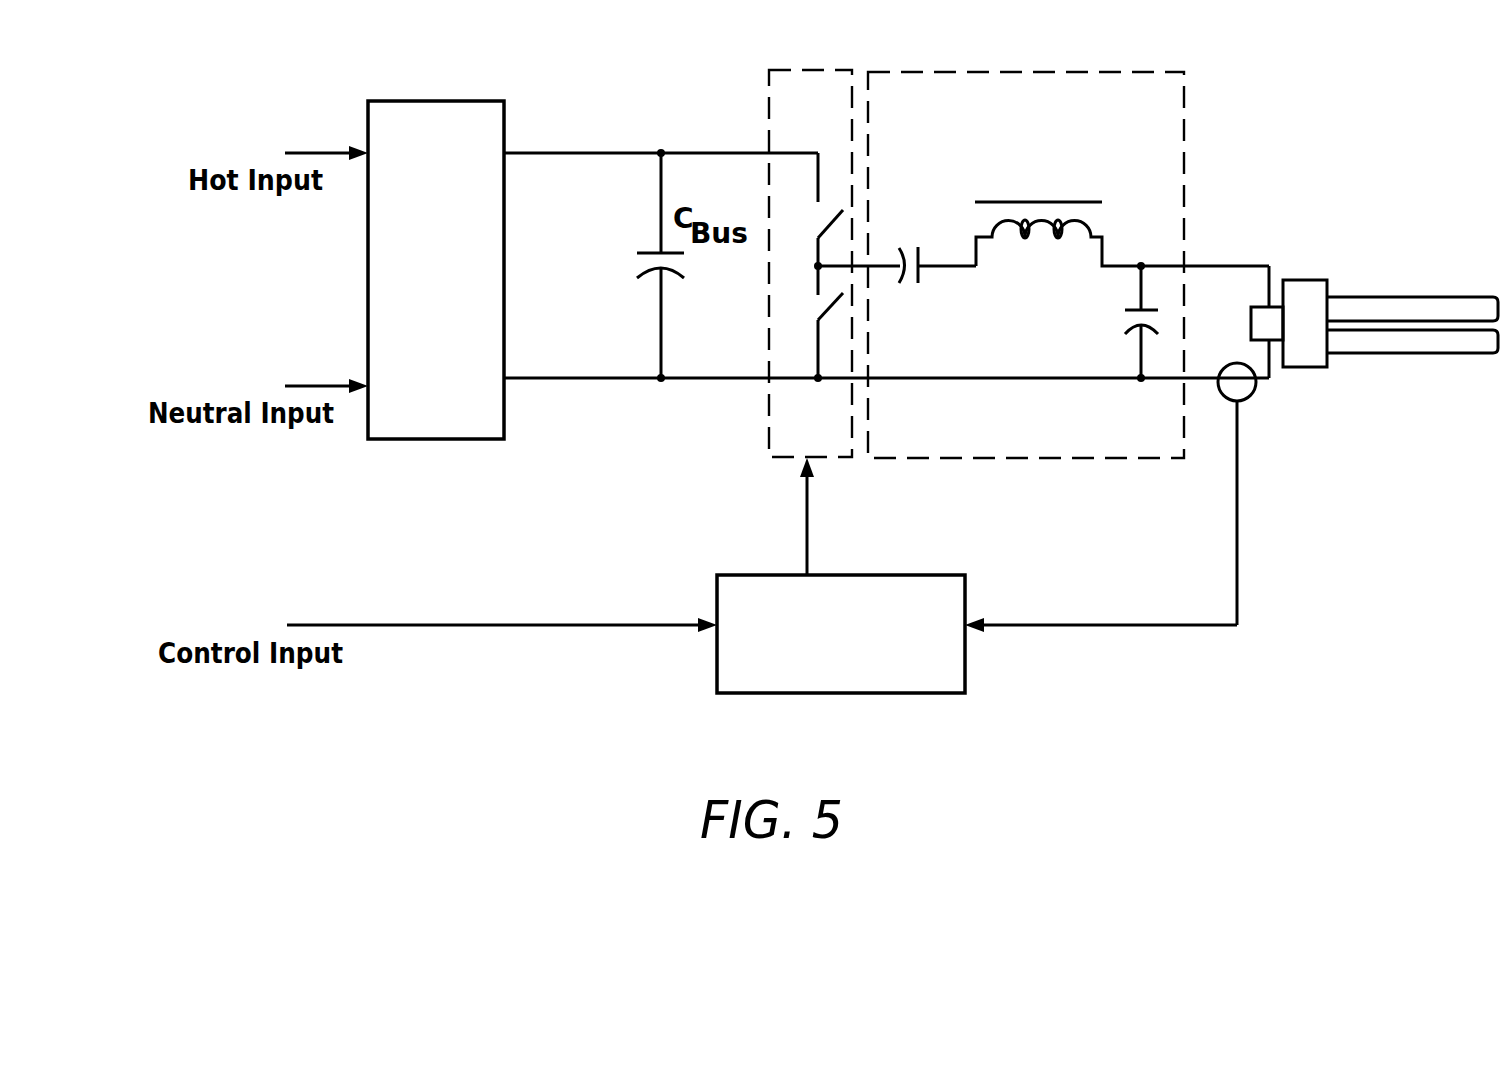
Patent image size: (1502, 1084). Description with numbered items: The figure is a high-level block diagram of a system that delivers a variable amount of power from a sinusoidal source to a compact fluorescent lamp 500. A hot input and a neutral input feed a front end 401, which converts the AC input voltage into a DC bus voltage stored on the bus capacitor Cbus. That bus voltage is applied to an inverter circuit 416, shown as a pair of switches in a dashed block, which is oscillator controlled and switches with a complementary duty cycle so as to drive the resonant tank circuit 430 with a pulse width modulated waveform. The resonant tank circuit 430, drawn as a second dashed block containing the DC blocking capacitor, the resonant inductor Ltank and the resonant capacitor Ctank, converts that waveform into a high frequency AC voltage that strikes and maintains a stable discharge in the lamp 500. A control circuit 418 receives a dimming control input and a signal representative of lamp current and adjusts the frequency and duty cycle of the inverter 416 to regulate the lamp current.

The front end 401 is at (502, 138).
The inverter circuit 416 is at (847, 104).
The resonant tank circuit 430 is at (1179, 108).
The control circuit 418 is at (962, 605).
The compact fluorescent lamp 500 is at (1418, 297).